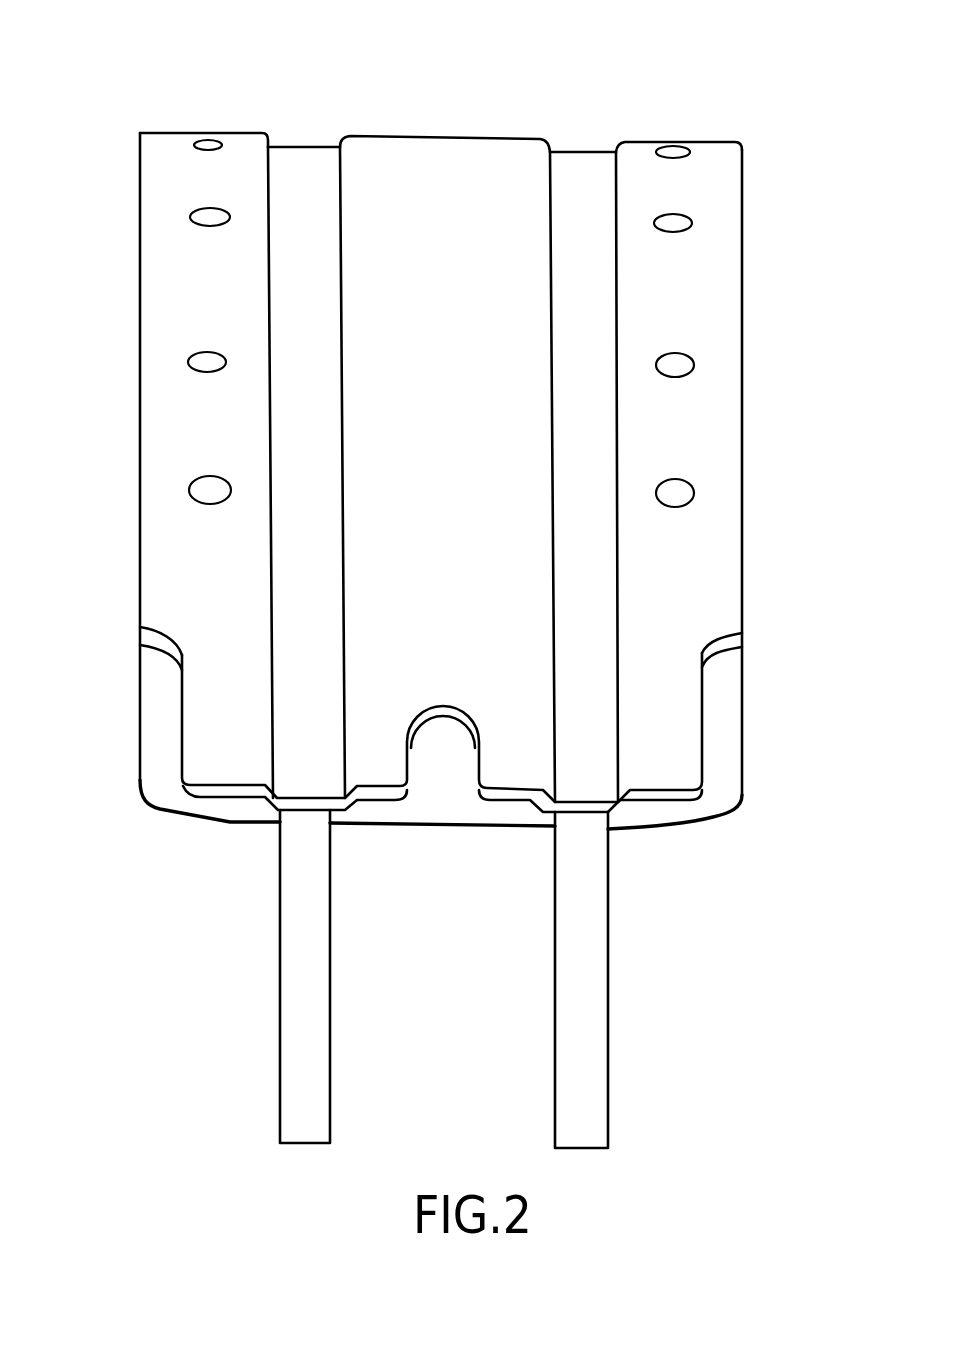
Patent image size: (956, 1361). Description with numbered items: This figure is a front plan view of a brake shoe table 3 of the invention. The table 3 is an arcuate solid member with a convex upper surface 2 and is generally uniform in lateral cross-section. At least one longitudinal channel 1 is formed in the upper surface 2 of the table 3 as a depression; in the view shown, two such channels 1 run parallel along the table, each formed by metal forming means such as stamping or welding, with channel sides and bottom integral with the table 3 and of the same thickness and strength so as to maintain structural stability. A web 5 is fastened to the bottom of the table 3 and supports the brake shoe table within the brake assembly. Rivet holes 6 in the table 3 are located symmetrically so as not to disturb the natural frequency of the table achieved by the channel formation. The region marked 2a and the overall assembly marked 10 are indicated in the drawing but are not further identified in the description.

The longitudinal channel 1 is at (293, 135).
The upper surface 2 is at (455, 442).
The bent edge portion 2a is at (163, 735).
The table 3 is at (750, 640).
The web 5 is at (303, 1063).
The rivet holes 6 is at (208, 222).
The assembly 10 is at (147, 955).